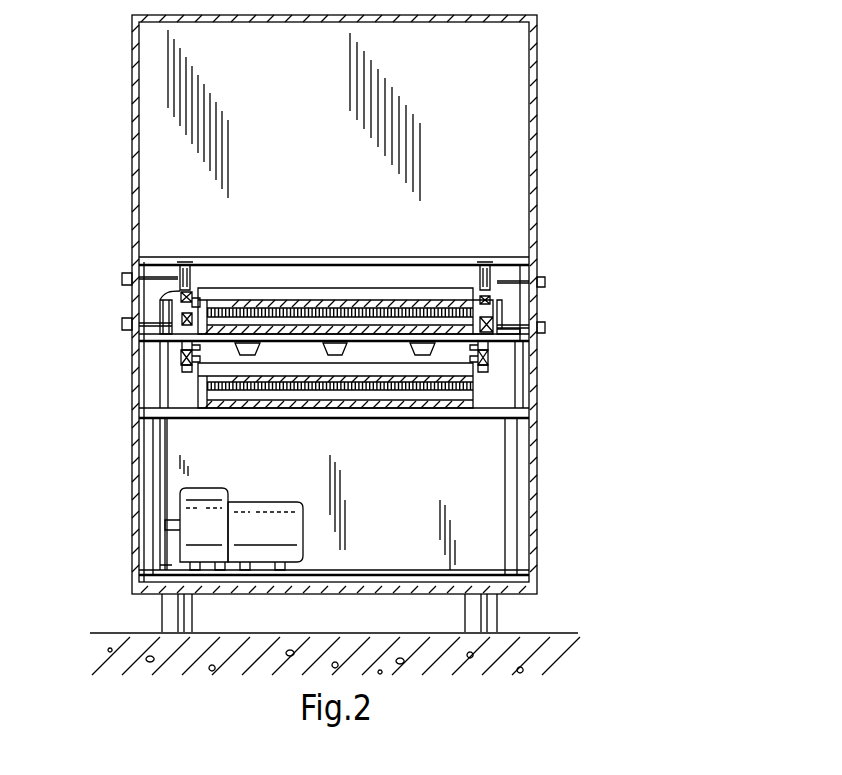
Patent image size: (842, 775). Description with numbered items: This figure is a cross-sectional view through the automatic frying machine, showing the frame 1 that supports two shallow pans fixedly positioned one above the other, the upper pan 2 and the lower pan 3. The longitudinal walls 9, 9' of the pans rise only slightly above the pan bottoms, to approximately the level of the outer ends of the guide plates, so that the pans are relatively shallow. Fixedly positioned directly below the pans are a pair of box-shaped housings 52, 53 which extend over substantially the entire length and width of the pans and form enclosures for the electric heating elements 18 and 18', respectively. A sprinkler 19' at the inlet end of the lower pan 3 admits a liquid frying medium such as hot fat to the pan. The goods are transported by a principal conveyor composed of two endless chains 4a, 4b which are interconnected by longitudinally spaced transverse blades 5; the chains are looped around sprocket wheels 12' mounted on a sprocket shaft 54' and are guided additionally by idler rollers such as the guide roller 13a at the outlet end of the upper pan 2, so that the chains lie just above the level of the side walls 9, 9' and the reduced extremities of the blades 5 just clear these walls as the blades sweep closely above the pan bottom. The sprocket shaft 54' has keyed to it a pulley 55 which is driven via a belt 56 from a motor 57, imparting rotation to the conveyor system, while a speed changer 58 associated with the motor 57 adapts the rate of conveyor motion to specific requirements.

The frame 1 is at (528, 490).
The upper pan 2 is at (392, 298).
The lower pan 3 is at (440, 405).
The endless chain 4a is at (181, 297).
The endless chain 4b is at (472, 300).
The transverse blades 5 is at (318, 300).
The longitudinal wall 9 is at (317, 291).
The longitudinal wall 9' is at (330, 382).
The sprocket wheels 12' is at (345, 353).
The guide roller 13a is at (185, 264).
The electric heating element 18 is at (339, 268).
The electric heating element 18' is at (339, 426).
The sprinkler 19' is at (337, 400).
The box-shaped housing 52 is at (230, 302).
The box-shaped housing 53 is at (255, 400).
The sprocket shaft 54' is at (547, 318).
The pulley 55 is at (160, 305).
The belt 56 is at (168, 430).
The motor 57 is at (282, 502).
The speed changer 58 is at (214, 488).